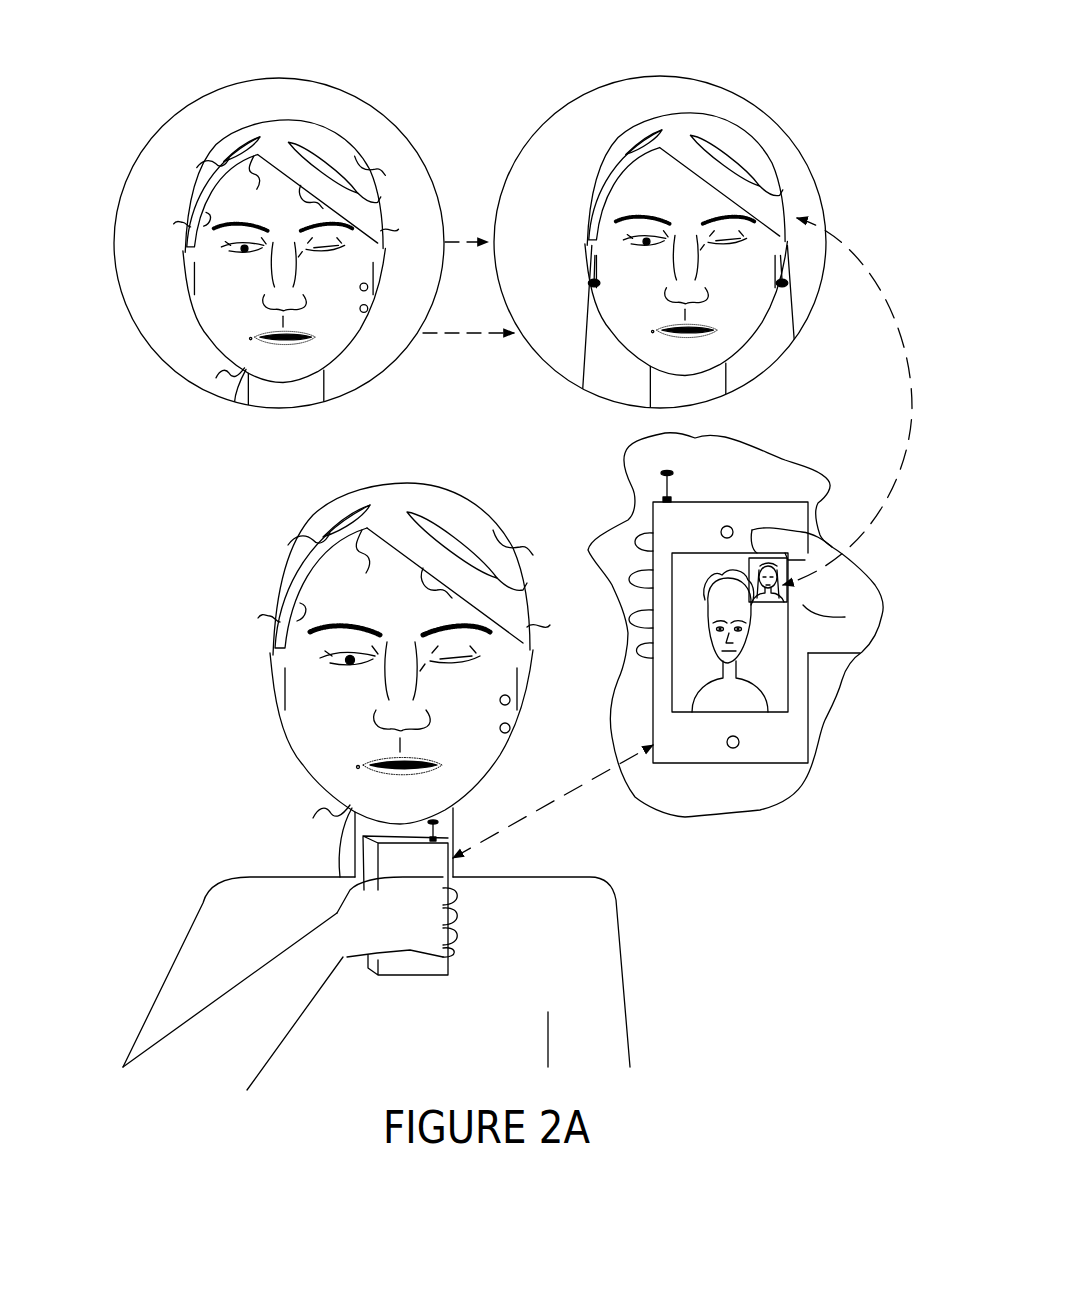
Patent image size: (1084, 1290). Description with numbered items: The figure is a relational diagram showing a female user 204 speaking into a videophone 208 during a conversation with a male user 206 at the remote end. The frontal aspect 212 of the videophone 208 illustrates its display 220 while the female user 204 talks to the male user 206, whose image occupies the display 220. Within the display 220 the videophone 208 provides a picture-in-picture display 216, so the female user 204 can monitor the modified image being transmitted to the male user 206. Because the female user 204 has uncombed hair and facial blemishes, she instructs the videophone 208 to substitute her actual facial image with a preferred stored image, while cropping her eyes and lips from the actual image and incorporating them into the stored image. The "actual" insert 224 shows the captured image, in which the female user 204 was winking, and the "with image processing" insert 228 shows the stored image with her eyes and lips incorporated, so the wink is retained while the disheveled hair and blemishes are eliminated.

The female user 204 is at (376, 786).
The male user 206 is at (753, 658).
The videophone 208 is at (413, 978).
The frontal aspect 212 is at (756, 649).
The picture-in-picture (PIP) display 216 is at (758, 551).
The display 220 is at (795, 580).
The "actual" insert 224 is at (352, 90).
The "with image processing" insert 228 is at (760, 107).